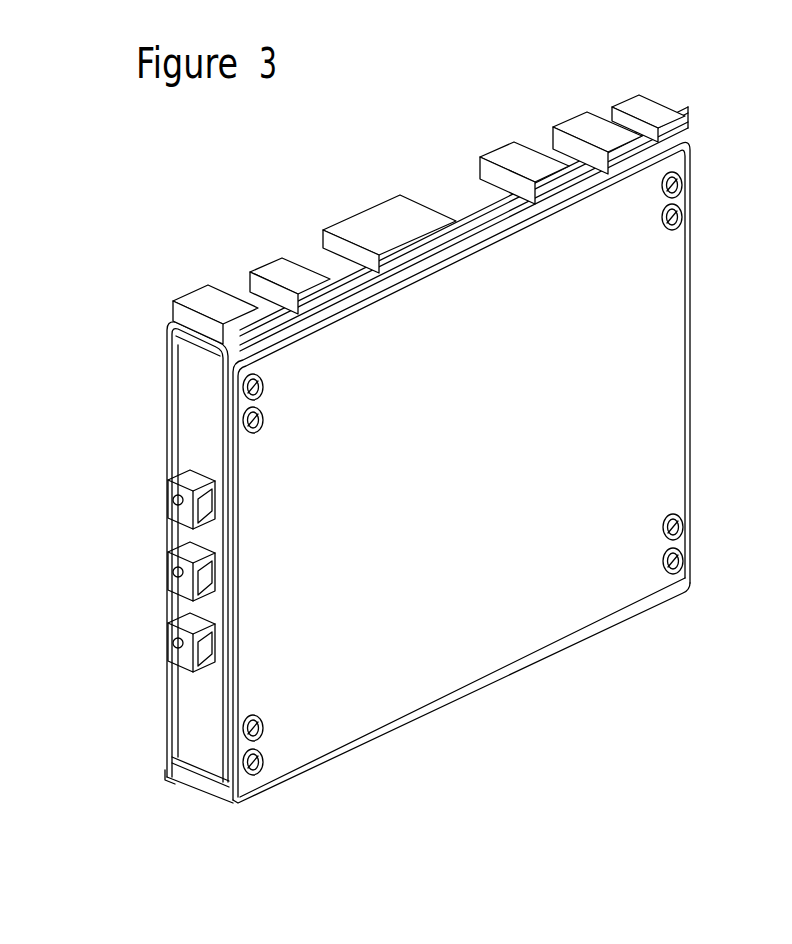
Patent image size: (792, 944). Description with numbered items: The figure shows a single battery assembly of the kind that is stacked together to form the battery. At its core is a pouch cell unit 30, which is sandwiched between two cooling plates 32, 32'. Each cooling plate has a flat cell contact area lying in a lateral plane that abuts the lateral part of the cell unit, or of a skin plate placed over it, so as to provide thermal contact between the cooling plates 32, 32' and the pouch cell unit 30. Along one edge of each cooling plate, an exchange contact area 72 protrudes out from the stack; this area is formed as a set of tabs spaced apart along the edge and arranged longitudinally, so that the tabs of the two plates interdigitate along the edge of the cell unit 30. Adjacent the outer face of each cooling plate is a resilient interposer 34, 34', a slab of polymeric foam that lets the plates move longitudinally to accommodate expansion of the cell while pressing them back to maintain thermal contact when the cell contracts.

The pouch cell unit 30 is at (203, 760).
The cooling plate 32 is at (461, 721).
The cooling plate 32' is at (132, 791).
The resilient interposer 34 is at (461, 471).
The resilient interposer 34' is at (155, 552).
The exchange contact area 72 is at (193, 290).